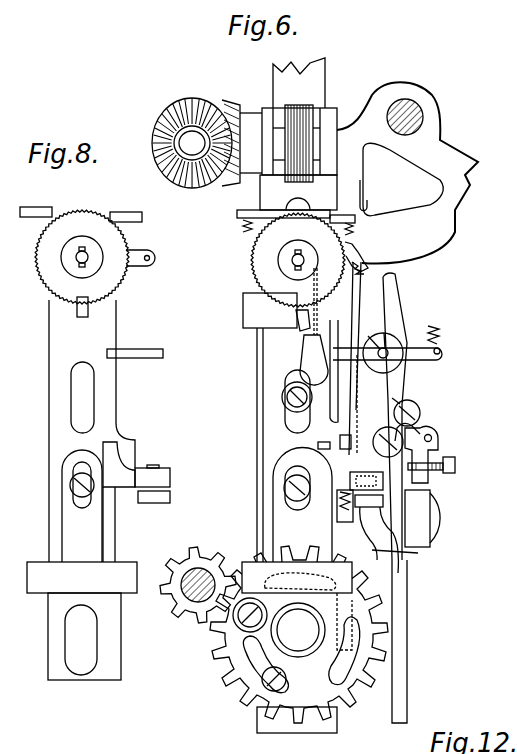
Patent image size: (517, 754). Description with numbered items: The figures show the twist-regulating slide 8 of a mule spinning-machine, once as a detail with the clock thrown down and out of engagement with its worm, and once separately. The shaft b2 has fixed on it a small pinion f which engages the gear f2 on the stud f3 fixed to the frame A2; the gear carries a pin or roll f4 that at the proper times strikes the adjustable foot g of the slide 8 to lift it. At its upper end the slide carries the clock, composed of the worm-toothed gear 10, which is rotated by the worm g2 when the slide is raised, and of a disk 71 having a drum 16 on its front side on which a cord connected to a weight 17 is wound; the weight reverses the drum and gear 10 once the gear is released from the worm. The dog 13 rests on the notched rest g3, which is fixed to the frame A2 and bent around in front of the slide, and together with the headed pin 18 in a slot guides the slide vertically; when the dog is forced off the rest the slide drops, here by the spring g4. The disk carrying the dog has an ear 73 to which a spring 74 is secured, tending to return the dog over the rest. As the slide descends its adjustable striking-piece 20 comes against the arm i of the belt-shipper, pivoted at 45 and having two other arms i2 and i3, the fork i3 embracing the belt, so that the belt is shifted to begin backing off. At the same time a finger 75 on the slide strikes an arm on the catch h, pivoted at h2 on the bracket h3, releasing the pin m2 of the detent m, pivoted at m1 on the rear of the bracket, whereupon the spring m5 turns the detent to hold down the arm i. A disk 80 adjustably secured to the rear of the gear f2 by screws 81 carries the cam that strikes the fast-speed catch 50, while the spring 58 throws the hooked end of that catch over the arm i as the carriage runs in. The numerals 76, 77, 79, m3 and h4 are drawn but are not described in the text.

In FIG. 8, the twist-regulating slide 8 is at (49, 449).
In FIG. 6, the twist-regulating slide 8 is at (297, 441).
In FIG. 8, the worm-toothed gear 10 is at (38, 284).
In FIG. 6, the worm-toothed gear 10 is at (252, 252).
In FIG. 8, the dog 13 is at (82, 318).
In FIG. 6, the dog 13 is at (300, 333).
In FIG. 8, the drum 16 is at (89, 262).
In FIG. 6, the drum 16 is at (292, 256).
In FIG. 6, the weight 17 is at (314, 360).
In FIG. 6, the headed pin 18 is at (282, 397).
In FIG. 8, the adjustable striking-piece 20 is at (164, 486).
In FIG. 6, the adjustable striking-piece 20 is at (366, 490).
In FIG. 6, the pivot of the belt-shipper 45 is at (437, 518).
In FIG. 6, the fast-speed catch 50 is at (405, 558).
In FIG. 6, the spring 58 is at (311, 444).
In FIG. 8, the disk 71 is at (88, 266).
In FIG. 6, the disk 71 is at (290, 260).
In FIG. 8, the ear 73 is at (149, 255).
In FIG. 6, the ear 73 is at (359, 254).
In FIG. 6, the spring 74 is at (365, 358).
In FIG. 8, the finger 75 is at (134, 438).
In FIG. 6, the finger 75 is at (352, 432).
In FIG. 6, the bevel gear 76 is at (172, 172).
In FIG. 6, the bevel pinion 77 is at (230, 185).
In FIG. 6, the cord 79 is at (316, 297).
In FIG. 6, the disk 80 is at (265, 664).
In FIG. 6, the screws 81 is at (287, 677).
In FIG. 6, the frame A2 is at (322, 90).
In FIG. 8, the adjustable foot g is at (82, 621).
In FIG. 6, the adjustable foot g is at (250, 565).
In FIG. 6, the worm g2 is at (314, 112).
In FIG. 6, the rest g3 is at (270, 310).
In FIG. 6, the spring g4 is at (240, 226).
In FIG. 6, the arm of the belt-shipper i is at (338, 510).
In FIG. 6, the arm of the belt-shipper i2 is at (402, 416).
In FIG. 6, the fork of the shipper-lever i3 is at (407, 641).
In FIG. 6, the detent m is at (438, 448).
In FIG. 6, the pivot of the detent m1 is at (380, 345).
In FIG. 6, the pin of the detent m2 is at (432, 438).
In FIG. 6, the set screw m3 is at (455, 467).
In FIG. 6, the spring m5 is at (448, 330).
In FIG. 6, the catch h is at (419, 423).
In FIG. 6, the pivot of the catch h2 is at (384, 433).
In FIG. 6, the bracket h3 is at (383, 393).
In FIG. 6, the roller h4 is at (418, 410).
In FIG. 6, the shaft b2 is at (195, 565).
In FIG. 6, the pinion f is at (198, 612).
In FIG. 6, the gear f2 is at (238, 692).
In FIG. 6, the stud f3 is at (298, 630).
In FIG. 6, the pin or roll f4 is at (238, 624).